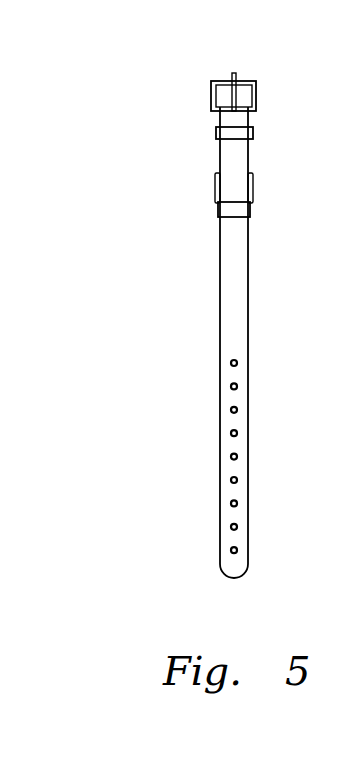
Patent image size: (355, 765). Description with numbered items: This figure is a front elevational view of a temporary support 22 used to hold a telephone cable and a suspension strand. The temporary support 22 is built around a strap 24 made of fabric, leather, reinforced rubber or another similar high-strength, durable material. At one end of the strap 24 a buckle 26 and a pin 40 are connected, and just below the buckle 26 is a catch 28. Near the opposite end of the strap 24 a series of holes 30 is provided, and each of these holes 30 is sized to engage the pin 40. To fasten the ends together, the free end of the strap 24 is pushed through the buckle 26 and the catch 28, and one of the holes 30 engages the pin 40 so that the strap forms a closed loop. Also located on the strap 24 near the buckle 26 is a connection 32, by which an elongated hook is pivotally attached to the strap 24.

The temporary support 22 is at (180, 322).
The strap 24 is at (248, 308).
The buckle 26 is at (257, 89).
The catch 28 is at (253, 131).
The holes 30 is at (236, 386).
The connection 32 is at (250, 206).
The pin 40 is at (236, 77).